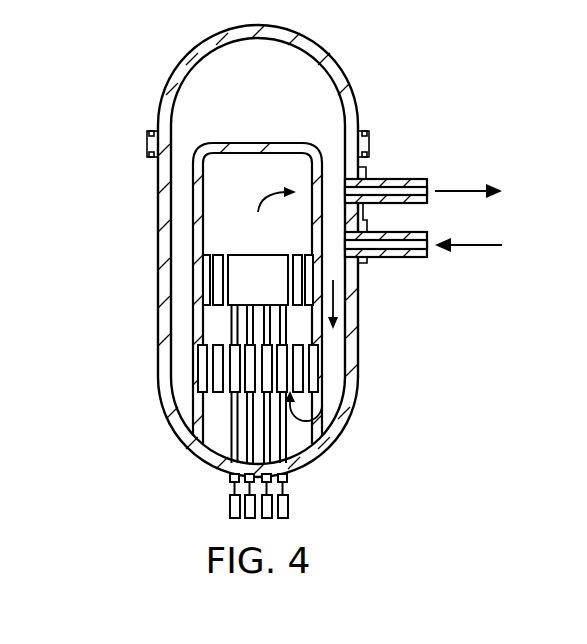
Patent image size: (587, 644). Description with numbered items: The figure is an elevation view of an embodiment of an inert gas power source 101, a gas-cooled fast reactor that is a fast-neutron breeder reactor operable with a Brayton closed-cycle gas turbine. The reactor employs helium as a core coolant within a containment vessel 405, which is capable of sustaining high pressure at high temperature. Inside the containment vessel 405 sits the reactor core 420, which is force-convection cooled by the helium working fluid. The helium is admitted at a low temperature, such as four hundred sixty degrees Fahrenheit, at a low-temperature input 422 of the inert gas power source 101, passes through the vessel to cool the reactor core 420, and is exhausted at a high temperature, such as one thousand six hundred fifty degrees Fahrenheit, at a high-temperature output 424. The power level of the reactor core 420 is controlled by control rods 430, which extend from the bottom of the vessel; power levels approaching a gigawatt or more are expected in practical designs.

The inert gas power source 101 is at (106, 186).
The containment vessel 405 is at (145, 286).
The reactor core 420 is at (238, 292).
The low-temperature input 422 is at (385, 289).
The high-temperature output 424 is at (383, 154).
The control rods 430 is at (192, 503).